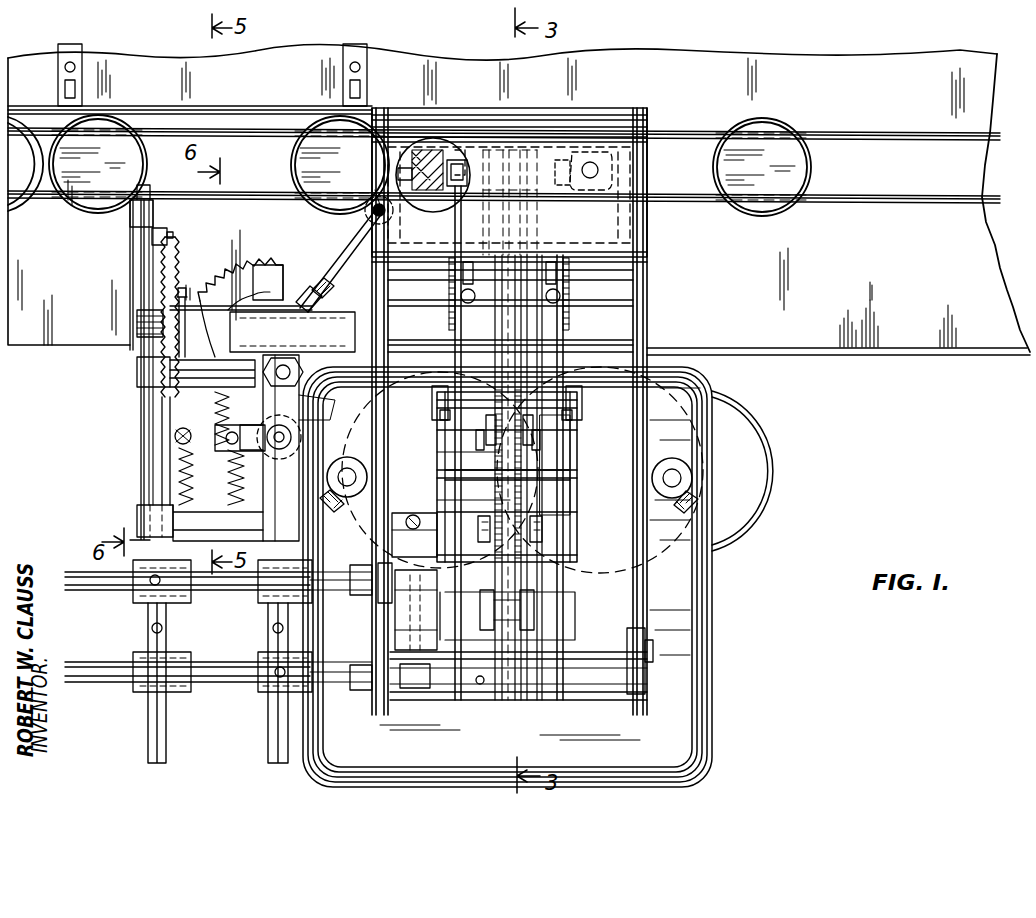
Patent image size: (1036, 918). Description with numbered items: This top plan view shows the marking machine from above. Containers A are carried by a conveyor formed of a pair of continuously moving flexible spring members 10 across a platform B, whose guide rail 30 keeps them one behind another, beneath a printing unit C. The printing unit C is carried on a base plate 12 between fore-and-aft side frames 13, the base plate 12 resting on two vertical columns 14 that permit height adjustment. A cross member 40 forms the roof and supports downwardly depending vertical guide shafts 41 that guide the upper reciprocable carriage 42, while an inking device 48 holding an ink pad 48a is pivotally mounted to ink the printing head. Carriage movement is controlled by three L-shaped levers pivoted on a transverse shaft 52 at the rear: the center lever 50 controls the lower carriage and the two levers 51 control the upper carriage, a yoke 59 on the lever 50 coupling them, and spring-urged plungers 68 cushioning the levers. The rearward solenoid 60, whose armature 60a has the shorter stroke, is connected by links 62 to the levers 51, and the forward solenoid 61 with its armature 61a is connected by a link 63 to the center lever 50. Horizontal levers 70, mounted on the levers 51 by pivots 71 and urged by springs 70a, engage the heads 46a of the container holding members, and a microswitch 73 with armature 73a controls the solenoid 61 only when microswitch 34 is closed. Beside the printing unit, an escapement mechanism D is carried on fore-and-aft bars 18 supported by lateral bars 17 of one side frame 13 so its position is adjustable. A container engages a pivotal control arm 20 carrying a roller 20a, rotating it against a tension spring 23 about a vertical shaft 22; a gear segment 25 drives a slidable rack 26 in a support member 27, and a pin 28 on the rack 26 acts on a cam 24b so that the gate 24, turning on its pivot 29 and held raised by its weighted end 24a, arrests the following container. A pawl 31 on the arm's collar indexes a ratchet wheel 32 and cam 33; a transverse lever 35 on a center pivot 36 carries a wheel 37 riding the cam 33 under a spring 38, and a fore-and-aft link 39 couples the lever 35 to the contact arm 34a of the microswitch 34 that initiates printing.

The flexible spring members 10 is at (842, 132).
The base plate 12 is at (692, 704).
The side frames 13 is at (652, 548).
The vertical columns 14 is at (347, 468).
The laterally disposed horizontal bars 17 is at (96, 662).
The fore-and-aft bars 18 is at (268, 736).
The control arm 20 is at (358, 216).
The roller 20a is at (376, 196).
The vertical shaft 22 is at (278, 364).
The tension spring 23 is at (256, 452).
The gate 24 is at (144, 210).
The weighted end 24a is at (136, 362).
The cam 24b is at (137, 320).
The gear segment 25 is at (262, 270).
The gear rack 26 is at (160, 268).
The support member 27 is at (138, 400).
The horizontal pin 28 is at (150, 236).
The pivot 29 is at (136, 330).
The guide rail 30 is at (272, 106).
The pawl 31 is at (298, 302).
The ratchet wheel 32 is at (292, 332).
The cam member 33 is at (268, 282).
The microswitch 34 is at (346, 318).
The contact arm 34a is at (241, 289).
The lever 35 is at (214, 402).
The center pivot 36 is at (232, 452).
The wheel 37 is at (304, 432).
The spring 38 is at (178, 478).
The fore-and-aft link 39 is at (187, 346).
The cross member 40 is at (640, 230).
The vertical guide shafts 41 is at (440, 200).
The upper reciprocable carriage 42 is at (420, 150).
The head 46a is at (455, 158).
The inking device 48 is at (510, 282).
The ink pad 48a is at (640, 272).
The center lever 50 is at (516, 272).
The levers 51 is at (468, 304).
The transverse shaft 52 is at (680, 676).
The yoke 59 is at (560, 636).
The solenoid 60 is at (545, 556).
The armature 60a is at (505, 502).
The solenoid 61 is at (560, 455).
The armature 61a is at (500, 452).
The links 62 is at (484, 542).
The link 63 is at (486, 440).
The spring-urged plungers 68 is at (540, 602).
The levers 70 is at (449, 280).
The springs 70a is at (572, 262).
The pivot 71 is at (440, 386).
The microswitch 73 is at (392, 540).
The armature 73a is at (400, 630).
The containers A is at (30, 205).
The platform B is at (916, 356).
The printing unit C is at (598, 100).
The escapement mechanism D is at (209, 260).